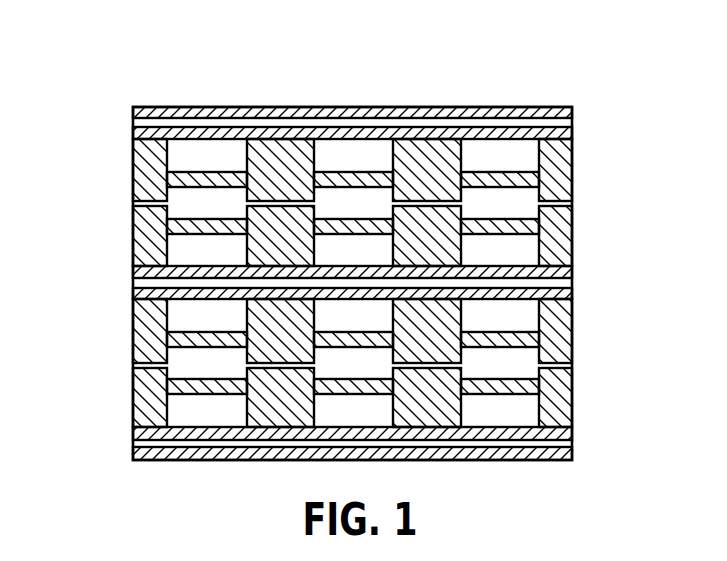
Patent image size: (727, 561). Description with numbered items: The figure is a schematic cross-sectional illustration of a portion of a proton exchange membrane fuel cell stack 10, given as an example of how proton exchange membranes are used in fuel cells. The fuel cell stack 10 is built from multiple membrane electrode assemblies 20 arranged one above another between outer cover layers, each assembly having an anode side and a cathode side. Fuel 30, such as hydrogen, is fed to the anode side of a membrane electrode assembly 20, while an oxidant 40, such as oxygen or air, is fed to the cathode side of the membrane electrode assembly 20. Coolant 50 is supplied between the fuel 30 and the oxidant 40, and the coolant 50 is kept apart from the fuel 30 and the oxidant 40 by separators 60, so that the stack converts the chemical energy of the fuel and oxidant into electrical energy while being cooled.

The fuel cell stack 10 is at (179, 80).
The membrane electrode assembly 20 is at (582, 108).
The fuel 30 is at (178, 160).
The oxidant 40 is at (185, 252).
The coolant 50 is at (177, 212).
The separator 60 is at (555, 172).